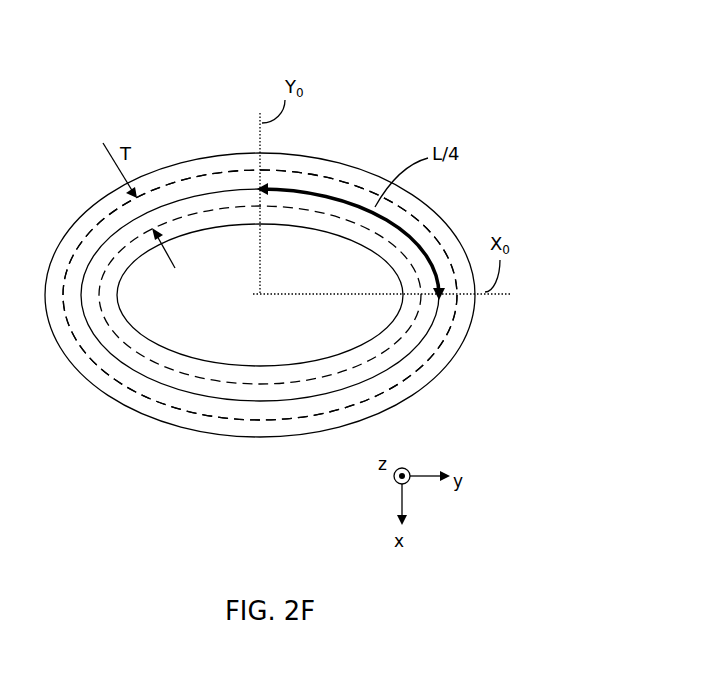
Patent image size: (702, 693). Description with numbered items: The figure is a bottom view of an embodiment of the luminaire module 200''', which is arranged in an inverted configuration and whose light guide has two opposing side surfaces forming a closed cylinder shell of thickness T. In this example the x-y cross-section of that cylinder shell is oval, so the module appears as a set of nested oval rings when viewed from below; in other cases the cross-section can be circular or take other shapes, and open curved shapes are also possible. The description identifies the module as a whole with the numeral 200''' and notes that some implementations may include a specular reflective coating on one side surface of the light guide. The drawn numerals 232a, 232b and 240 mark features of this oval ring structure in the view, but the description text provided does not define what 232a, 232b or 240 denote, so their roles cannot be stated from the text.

The luminaire module 200''' is at (268, 228).
The inner coil edge 232a is at (175, 336).
The outer coil edge 232b is at (126, 418).
The coil trace 240 is at (422, 377).